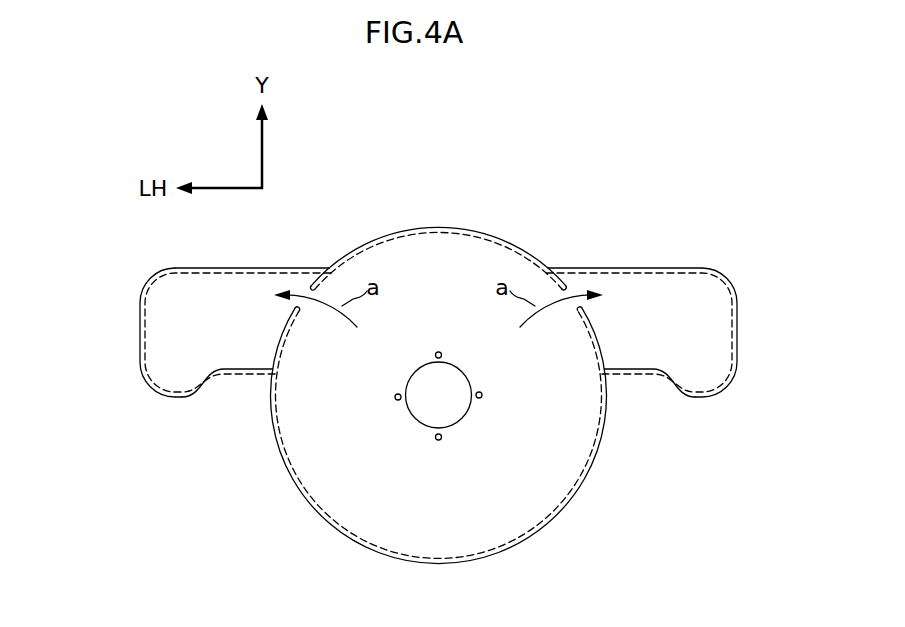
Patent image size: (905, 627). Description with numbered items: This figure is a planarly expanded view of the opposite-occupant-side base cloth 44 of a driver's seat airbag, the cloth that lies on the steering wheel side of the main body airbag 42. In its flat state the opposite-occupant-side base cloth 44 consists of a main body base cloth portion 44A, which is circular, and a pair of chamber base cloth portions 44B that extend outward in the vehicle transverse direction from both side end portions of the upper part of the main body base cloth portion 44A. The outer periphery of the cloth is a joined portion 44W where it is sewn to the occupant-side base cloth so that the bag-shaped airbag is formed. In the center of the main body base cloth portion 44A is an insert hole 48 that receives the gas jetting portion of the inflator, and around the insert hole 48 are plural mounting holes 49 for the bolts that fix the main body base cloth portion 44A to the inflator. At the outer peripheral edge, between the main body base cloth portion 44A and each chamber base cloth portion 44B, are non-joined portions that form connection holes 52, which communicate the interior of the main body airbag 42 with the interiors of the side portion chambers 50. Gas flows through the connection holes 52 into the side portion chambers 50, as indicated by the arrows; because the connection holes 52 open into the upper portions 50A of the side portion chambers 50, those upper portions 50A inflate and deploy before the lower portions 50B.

The opposite-occupant-side base cloth 44 is at (522, 232).
The main body base cloth portion 44A is at (455, 527).
The main body airbag 42 is at (439, 465).
The chamber base cloth portions 44B is at (448, 316).
The side portion chambers 50 is at (448, 316).
The joined portion 44W is at (432, 227).
The upper portions of the side portion chambers 50A is at (281, 278).
The lower portions of the side portion chambers 50B is at (237, 345).
The connection holes 52 is at (305, 313).
The insert hole 48 is at (452, 405).
The mounting holes 49 is at (396, 401).